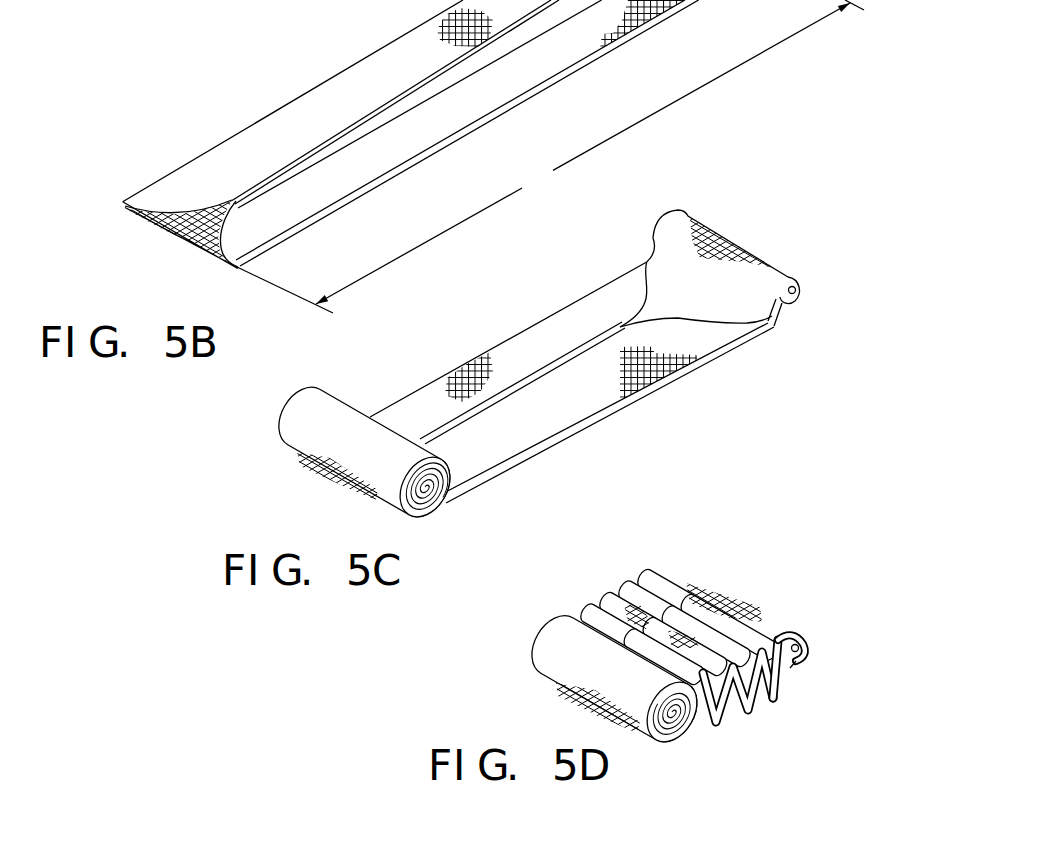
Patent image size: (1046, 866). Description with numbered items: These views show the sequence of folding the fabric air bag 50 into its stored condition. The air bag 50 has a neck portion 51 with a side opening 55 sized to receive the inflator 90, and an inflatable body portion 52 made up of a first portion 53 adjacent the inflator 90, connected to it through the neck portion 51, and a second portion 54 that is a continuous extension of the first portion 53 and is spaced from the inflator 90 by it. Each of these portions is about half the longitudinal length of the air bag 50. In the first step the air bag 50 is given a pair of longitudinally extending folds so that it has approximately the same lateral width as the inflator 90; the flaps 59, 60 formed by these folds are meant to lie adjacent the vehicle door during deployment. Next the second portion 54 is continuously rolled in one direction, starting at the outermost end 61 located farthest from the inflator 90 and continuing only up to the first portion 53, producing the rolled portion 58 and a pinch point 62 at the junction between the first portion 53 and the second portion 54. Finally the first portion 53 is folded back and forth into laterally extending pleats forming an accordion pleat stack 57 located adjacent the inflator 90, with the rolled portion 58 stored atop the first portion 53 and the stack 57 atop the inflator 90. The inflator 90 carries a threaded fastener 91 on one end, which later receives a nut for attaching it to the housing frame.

In FIG. 5B, the air bag 50 is at (270, 115).
In FIG. 5C, the air bag 50 is at (541, 312).
In FIG. 5D, the air bag 50 is at (587, 600).
In FIG. 5C, the neck portion 51 is at (668, 278).
In FIG. 5D, the neck portion 51 is at (780, 690).
In FIG. 5B, the inflatable body portion 52 is at (345, 69).
In FIG. 5C, the inflatable body portion 52 is at (497, 337).
In FIG. 5D, the inflatable body portion 52 is at (747, 717).
In FIG. 5C, the first portion 53 is at (588, 300).
In FIG. 5D, the first portion 53 is at (627, 583).
In FIG. 5B, the second portion 54 is at (165, 186).
In FIG. 5C, the second portion 54 is at (303, 430).
In FIG. 5D, the second portion 54 is at (553, 664).
In FIG. 5C, the side opening 55 is at (794, 298).
In FIG. 5D, the side opening 55 is at (800, 648).
In FIG. 5D, the accordion pleat stack 57 is at (677, 591).
In FIG. 5C, the rolled portion 58 is at (331, 433).
In FIG. 5D, the rolled portion 58 is at (568, 671).
In FIG. 5B, the flap 59 is at (217, 158).
In FIG. 5C, the flap 59 is at (400, 413).
In FIG. 5D, the flap 59 is at (670, 590).
In FIG. 5B, the flap 60 is at (283, 207).
In FIG. 5C, the flap 60 is at (475, 453).
In FIG. 5D, the flap 60 is at (733, 630).
In FIG. 5B, the outermost end 61 is at (157, 227).
In FIG. 5C, the pinch point 62 is at (441, 508).
In FIG. 5D, the pinch point 62 is at (697, 725).
In FIG. 5D, the inflator 90 is at (806, 645).
In FIG. 5D, the threaded fastener 91 is at (799, 657).